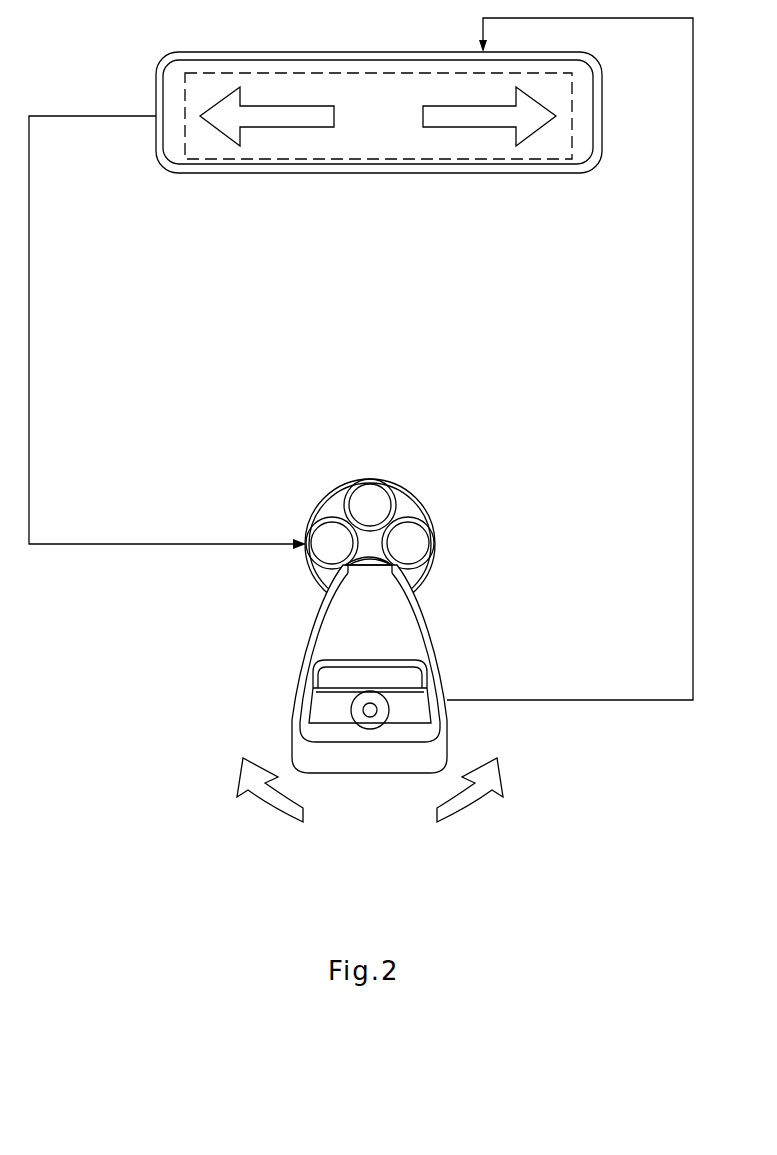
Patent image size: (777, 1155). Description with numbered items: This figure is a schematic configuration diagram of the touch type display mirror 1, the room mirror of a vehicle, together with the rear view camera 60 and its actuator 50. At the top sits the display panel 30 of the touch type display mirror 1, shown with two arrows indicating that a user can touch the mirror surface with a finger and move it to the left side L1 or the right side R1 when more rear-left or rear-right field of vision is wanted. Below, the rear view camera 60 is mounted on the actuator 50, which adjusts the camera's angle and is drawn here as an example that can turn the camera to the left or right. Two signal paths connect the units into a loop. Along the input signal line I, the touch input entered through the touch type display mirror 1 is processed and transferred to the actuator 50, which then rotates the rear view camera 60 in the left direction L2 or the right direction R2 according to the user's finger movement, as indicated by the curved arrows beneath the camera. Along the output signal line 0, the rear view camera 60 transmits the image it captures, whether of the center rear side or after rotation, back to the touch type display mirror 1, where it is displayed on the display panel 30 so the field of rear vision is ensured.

The touch type display mirror 1 is at (538, 200).
The display panel 30 is at (572, 142).
The left side L1 is at (287, 105).
The right side R1 is at (460, 105).
The input signal line I is at (30, 330).
The output signal line 0 is at (693, 330).
The actuator 50 is at (422, 498).
The rear view camera 60 is at (440, 650).
The left direction L2 is at (270, 810).
The right direction R2 is at (470, 810).